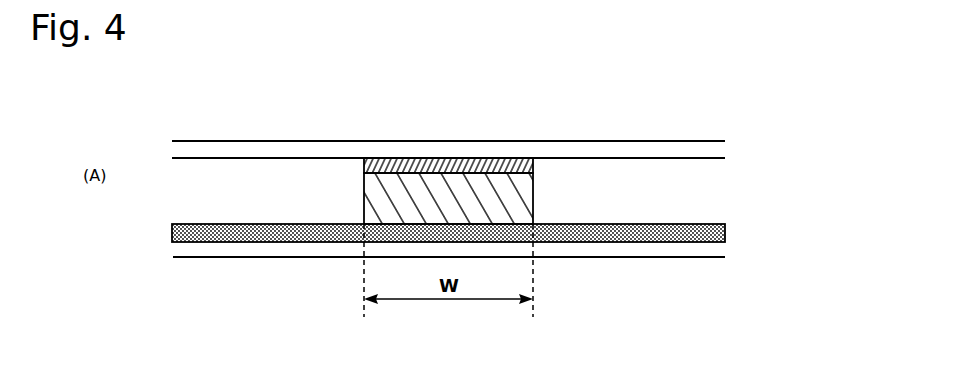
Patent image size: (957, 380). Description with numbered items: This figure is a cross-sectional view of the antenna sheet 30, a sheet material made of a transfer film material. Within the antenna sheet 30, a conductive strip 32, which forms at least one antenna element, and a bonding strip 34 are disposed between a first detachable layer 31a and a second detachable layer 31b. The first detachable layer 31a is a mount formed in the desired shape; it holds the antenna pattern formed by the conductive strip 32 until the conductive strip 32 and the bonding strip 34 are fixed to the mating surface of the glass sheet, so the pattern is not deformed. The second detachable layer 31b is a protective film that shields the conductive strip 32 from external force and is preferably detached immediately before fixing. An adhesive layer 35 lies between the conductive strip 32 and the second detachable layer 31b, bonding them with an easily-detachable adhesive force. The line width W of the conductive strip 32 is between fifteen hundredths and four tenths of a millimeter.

The antenna sheet 30 is at (730, 143).
The first detachable layer 31a is at (280, 148).
The second detachable layer 31b is at (262, 250).
The conductive strip 32 is at (507, 190).
The bonding strip 34 is at (430, 158).
The adhesive layer 35 is at (708, 225).